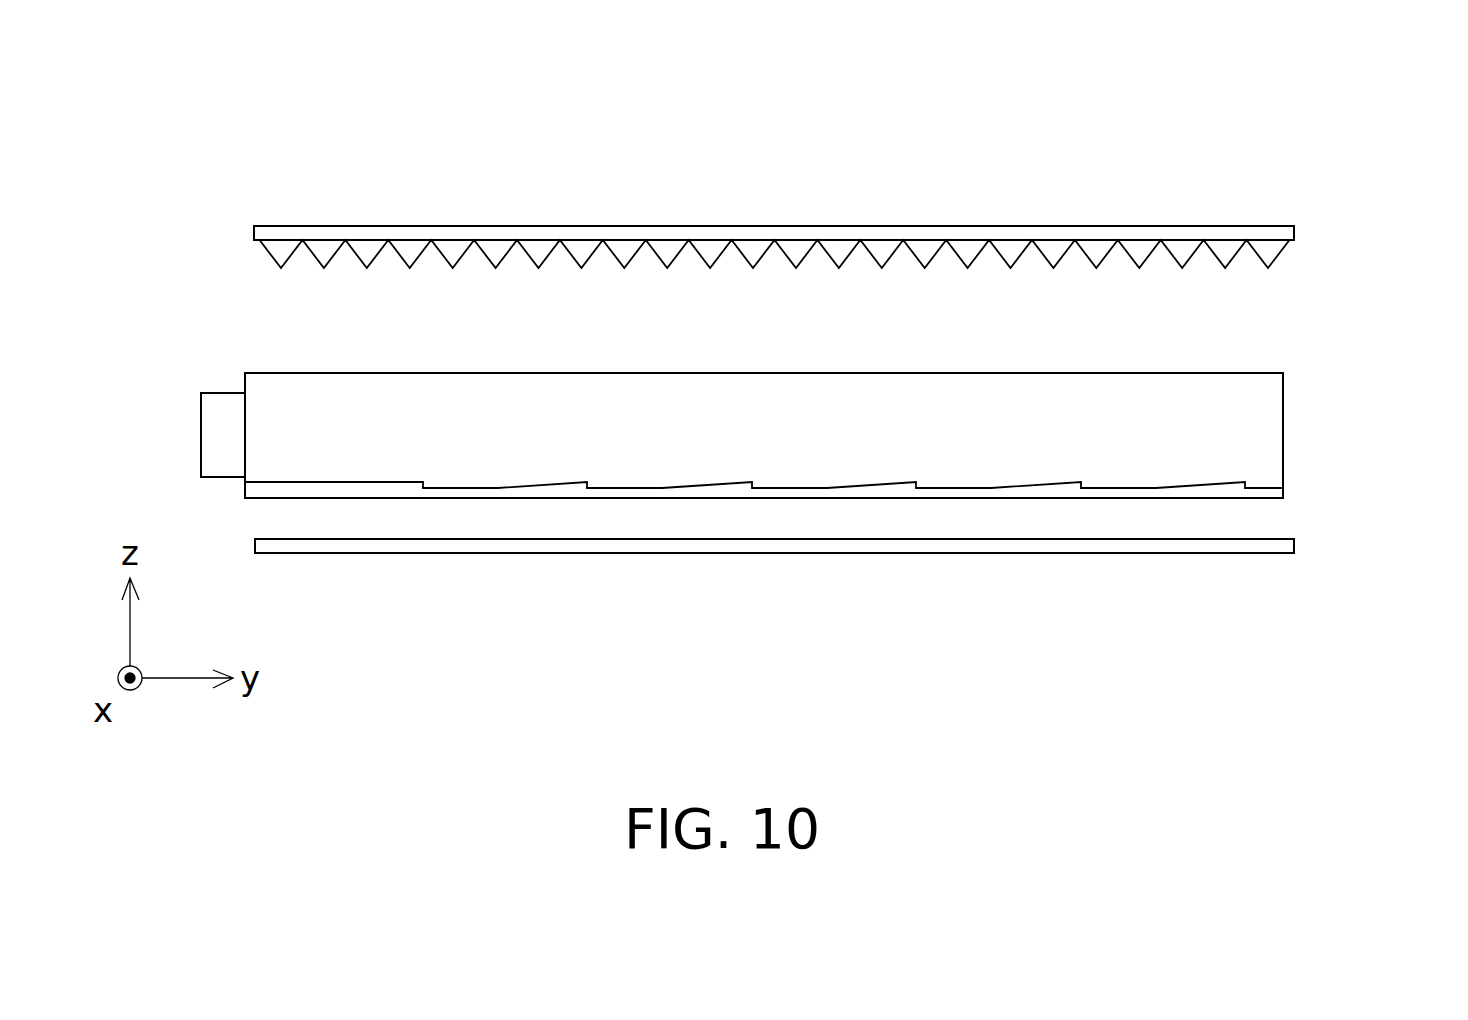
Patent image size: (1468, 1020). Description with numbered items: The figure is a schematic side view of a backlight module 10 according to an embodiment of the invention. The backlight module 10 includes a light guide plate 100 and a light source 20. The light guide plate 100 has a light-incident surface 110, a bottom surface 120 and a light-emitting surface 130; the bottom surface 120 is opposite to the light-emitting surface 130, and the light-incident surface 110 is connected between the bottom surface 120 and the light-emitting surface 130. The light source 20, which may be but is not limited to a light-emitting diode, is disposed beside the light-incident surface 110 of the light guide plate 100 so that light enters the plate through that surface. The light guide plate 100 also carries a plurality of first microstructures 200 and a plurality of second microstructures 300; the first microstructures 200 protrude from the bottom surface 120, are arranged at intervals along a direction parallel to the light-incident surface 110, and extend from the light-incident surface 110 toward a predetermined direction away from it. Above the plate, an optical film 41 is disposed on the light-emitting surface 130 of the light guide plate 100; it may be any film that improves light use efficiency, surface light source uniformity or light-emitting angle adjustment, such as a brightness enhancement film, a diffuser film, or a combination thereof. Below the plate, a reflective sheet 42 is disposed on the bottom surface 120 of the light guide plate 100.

The backlight module 10 is at (223, 110).
The light source 20 is at (208, 432).
The optical film 41 is at (1196, 233).
The reflective sheet 42 is at (1196, 554).
The light guide plate 100 is at (1305, 430).
The light-incident surface 110 is at (243, 385).
The bottom surface 120 is at (258, 484).
The light-emitting surface 130 is at (1233, 373).
The first microstructures 200 is at (312, 500).
The second microstructures 300 is at (1248, 494).